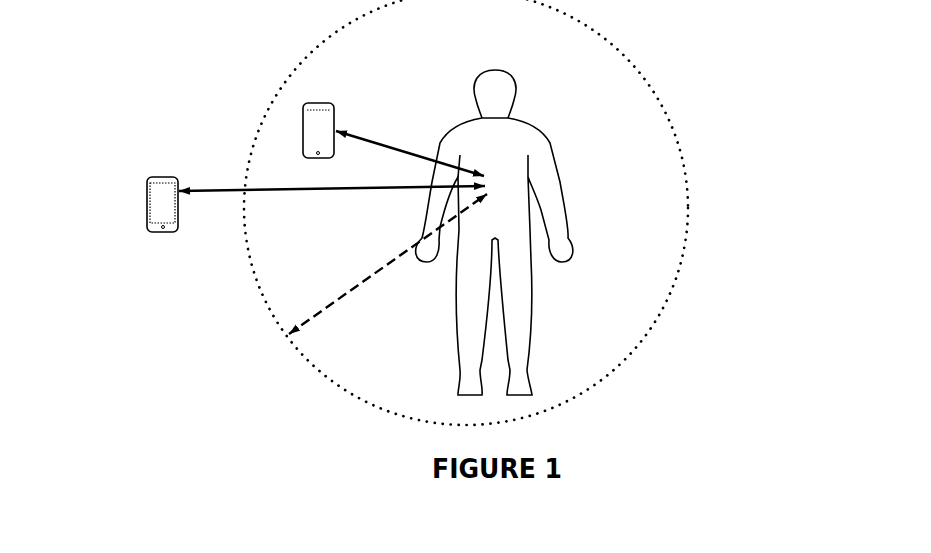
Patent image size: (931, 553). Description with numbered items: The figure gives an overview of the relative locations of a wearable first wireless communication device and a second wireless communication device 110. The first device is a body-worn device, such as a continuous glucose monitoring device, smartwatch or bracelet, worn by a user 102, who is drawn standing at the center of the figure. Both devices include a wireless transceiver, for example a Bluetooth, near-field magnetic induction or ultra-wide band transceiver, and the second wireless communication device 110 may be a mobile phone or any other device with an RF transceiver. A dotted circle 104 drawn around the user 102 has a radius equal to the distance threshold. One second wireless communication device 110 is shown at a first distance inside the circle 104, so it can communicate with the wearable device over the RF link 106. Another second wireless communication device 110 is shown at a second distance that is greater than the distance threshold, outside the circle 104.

The user 102 is at (542, 122).
The circle 104 is at (685, 172).
The RF link 106 is at (395, 145).
The second wireless communication device 110 is at (303, 130).